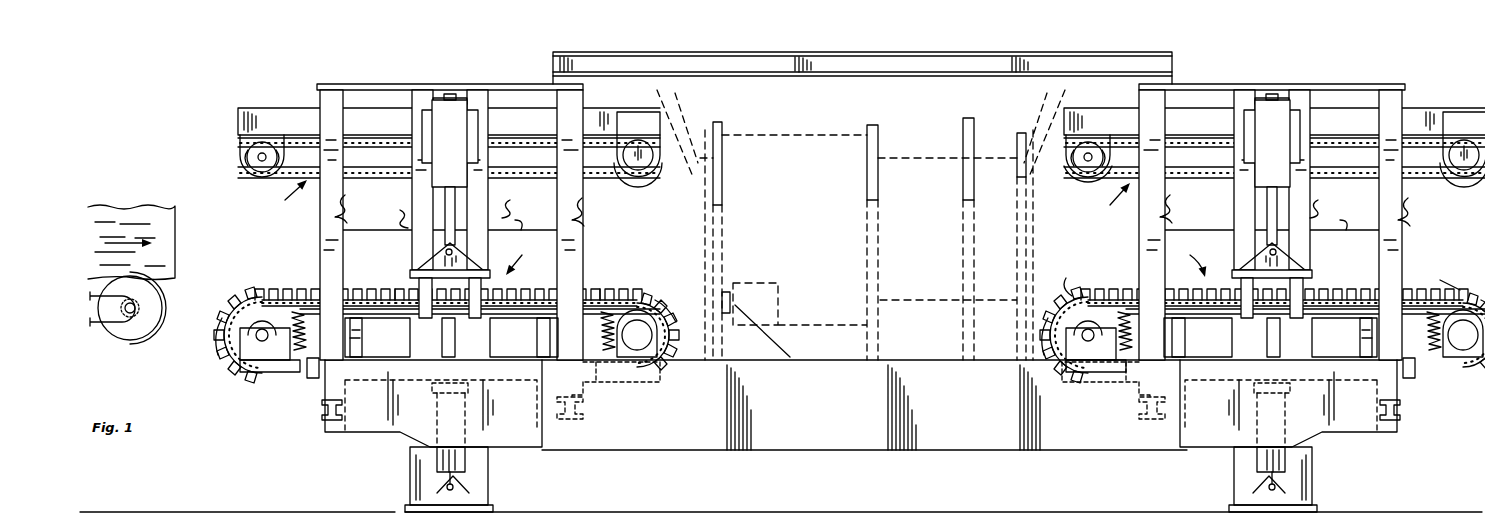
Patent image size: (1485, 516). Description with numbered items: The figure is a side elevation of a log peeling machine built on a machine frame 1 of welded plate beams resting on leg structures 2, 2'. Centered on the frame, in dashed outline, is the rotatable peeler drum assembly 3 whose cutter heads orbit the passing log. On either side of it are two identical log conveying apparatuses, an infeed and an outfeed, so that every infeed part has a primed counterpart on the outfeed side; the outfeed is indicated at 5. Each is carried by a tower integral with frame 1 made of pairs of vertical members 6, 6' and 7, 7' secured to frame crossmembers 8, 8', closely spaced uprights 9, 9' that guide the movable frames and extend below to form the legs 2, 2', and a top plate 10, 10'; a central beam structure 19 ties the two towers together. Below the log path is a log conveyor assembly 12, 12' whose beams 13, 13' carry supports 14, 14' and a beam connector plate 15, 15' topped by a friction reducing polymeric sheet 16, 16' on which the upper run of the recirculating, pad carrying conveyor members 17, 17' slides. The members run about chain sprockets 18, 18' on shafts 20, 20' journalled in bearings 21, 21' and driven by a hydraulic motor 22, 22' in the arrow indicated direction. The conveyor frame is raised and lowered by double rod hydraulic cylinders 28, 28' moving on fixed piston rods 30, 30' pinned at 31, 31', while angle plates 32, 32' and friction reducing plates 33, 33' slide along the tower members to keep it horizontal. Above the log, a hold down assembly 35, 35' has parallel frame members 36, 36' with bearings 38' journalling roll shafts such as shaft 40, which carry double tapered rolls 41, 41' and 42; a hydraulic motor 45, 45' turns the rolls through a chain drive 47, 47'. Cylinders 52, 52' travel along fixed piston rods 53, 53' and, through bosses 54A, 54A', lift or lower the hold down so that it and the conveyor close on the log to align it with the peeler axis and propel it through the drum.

The machine frame 1 is at (870, 452).
The leg structures 2 is at (335, 291).
The leg structures 2' is at (1281, 479).
The peeler drum assembly 3 is at (252, 283).
The log conveying apparatus (outfeed) 5 is at (232, 172).
The vertical members 6 is at (350, 202).
The vertical members 6' is at (1178, 205).
The vertical members 7 is at (589, 209).
The vertical members 7' is at (1419, 209).
The frame crossmembers 8 is at (464, 409).
The frame crossmembers 8' is at (1269, 416).
The uprights 9 is at (451, 209).
The uprights 9' is at (1328, 205).
The top plate 10 is at (450, 207).
The top plate 10' is at (1272, 207).
The log conveyor assembly 12 is at (521, 257).
The log conveyor assembly 12' is at (1190, 258).
The beams 13 is at (397, 403).
The beams 13' is at (1270, 403).
The supports 14 is at (400, 337).
The supports 14' is at (1279, 337).
The beam connector plate 15 is at (524, 337).
The beam connector plate 15' is at (1198, 337).
The polymeric sheet 16 is at (457, 284).
The polymeric sheet 16' is at (1283, 288).
The conveyor members 17 is at (509, 275).
The conveyor members 17' is at (1259, 279).
The conveyor chain sprockets 18 is at (453, 331).
The conveyor chain sprockets 18' is at (1279, 331).
The central beam structure 19 is at (852, 57).
The shafts 20 is at (252, 335).
The shafts 20' is at (1078, 335).
The bearings 21 is at (270, 370).
The bearings 21' is at (1078, 372).
The hydraulic motor 22 is at (648, 331).
The hydraulic motor 22' is at (1464, 331).
The hydraulic cylinders 28 is at (472, 420).
The hydraulic cylinders 28' is at (1288, 420).
The piston rod 30 is at (461, 462).
The piston rod 30' is at (1283, 462).
The pin 31 is at (453, 486).
The pin 31' is at (1269, 487).
The angle plates 32 is at (470, 381).
The angle plates 32' is at (1253, 381).
The friction reducing plate 33 is at (450, 378).
The friction reducing plate 33' is at (1259, 393).
The log hold down assembly 35 is at (284, 197).
The log hold down assembly 35' is at (1108, 201).
The frame members 36 is at (449, 104).
The frame members 36' is at (1274, 104).
The bearings 38' is at (1093, 145).
The roll shaft 40 is at (632, 186).
The double tapered roll 41 is at (248, 151).
The double tapered roll 41' is at (1082, 185).
The double tapered roll 42 is at (1464, 178).
The hydraulic motor 45 is at (638, 144).
The hydraulic motor 45' is at (1464, 144).
The chain drive 47 is at (449, 158).
The chain drive 47' is at (1274, 158).
The cylinders 52 is at (449, 140).
The cylinders 52' is at (1272, 140).
The fixed piston rod 53 is at (450, 252).
The fixed piston rod 53' is at (1272, 252).
The bosses 54A is at (476, 136).
The bosses 54A' is at (1294, 136).
The roller a is at (122, 342).